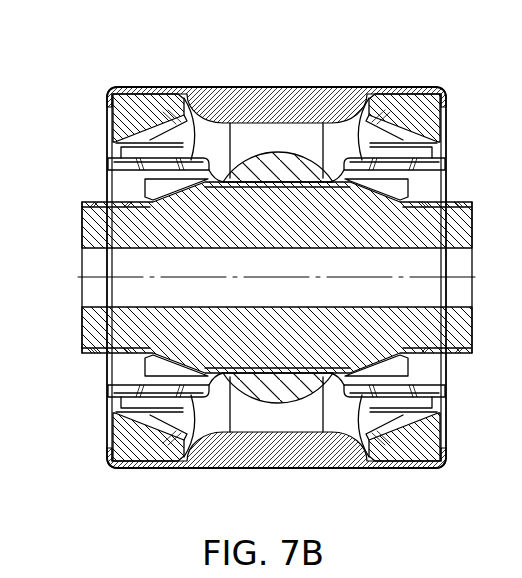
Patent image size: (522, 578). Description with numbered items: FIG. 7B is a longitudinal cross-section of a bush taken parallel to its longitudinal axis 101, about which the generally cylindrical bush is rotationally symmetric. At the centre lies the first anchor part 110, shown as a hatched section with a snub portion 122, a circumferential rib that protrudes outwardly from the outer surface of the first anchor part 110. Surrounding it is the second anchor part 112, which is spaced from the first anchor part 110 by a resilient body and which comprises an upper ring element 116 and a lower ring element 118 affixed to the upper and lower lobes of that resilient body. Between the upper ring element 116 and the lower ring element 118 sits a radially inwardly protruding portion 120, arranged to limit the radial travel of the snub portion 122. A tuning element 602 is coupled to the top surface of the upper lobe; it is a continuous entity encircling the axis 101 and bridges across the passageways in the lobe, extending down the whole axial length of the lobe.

The longitudinal axis 101 is at (93, 272).
The first anchor part 110 is at (107, 222).
The second anchor part 112 is at (217, 85).
The upper ring element 116 is at (130, 103).
The lower ring element 118 is at (394, 98).
The radially inwardly protruding portion 120 is at (272, 119).
The snub portion 122 is at (288, 163).
The tuning element 602 is at (137, 390).